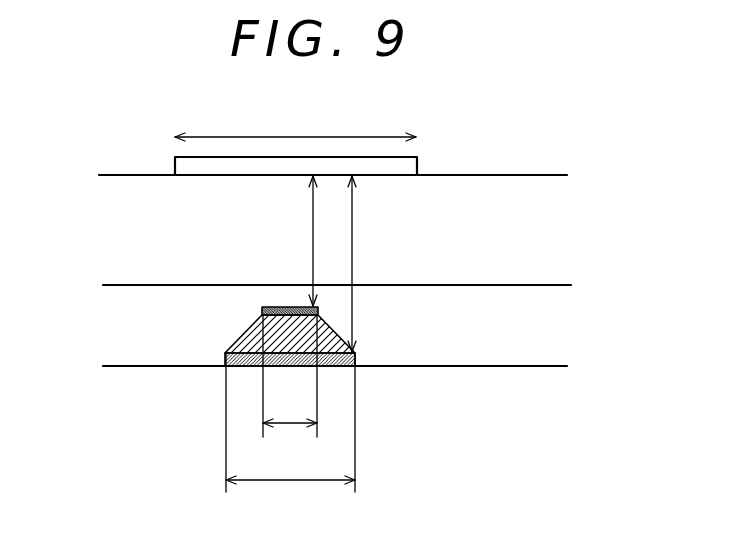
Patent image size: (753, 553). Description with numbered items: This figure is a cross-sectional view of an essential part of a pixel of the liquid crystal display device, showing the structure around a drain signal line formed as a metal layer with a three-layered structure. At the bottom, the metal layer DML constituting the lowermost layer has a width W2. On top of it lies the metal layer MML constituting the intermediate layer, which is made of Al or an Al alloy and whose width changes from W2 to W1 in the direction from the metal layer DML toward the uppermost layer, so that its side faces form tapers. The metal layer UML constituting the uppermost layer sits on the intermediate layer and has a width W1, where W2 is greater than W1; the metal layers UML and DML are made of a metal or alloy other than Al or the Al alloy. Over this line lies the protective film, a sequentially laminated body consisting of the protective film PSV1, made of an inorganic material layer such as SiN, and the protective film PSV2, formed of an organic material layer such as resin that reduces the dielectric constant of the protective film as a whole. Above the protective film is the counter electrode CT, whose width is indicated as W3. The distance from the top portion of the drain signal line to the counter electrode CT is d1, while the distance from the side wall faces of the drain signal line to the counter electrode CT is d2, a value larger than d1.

The counter electrode CT is at (417, 167).
The protective film PSV1 is at (520, 335).
The protective film PSV2 is at (530, 232).
The metal layer UML is at (262, 311).
The metal layer MML is at (242, 337).
The metal layer DML is at (225, 358).
The width of uppermost metal layer W1 is at (290, 388).
The width of lowermost metal layer W2 is at (290, 431).
The width of common electrode W3 is at (295, 124).
The distance from top portion of drain signal line to counter electrode d1 is at (300, 241).
The distance from side wall faces of drain signal line to counter electrode d2 is at (374, 264).